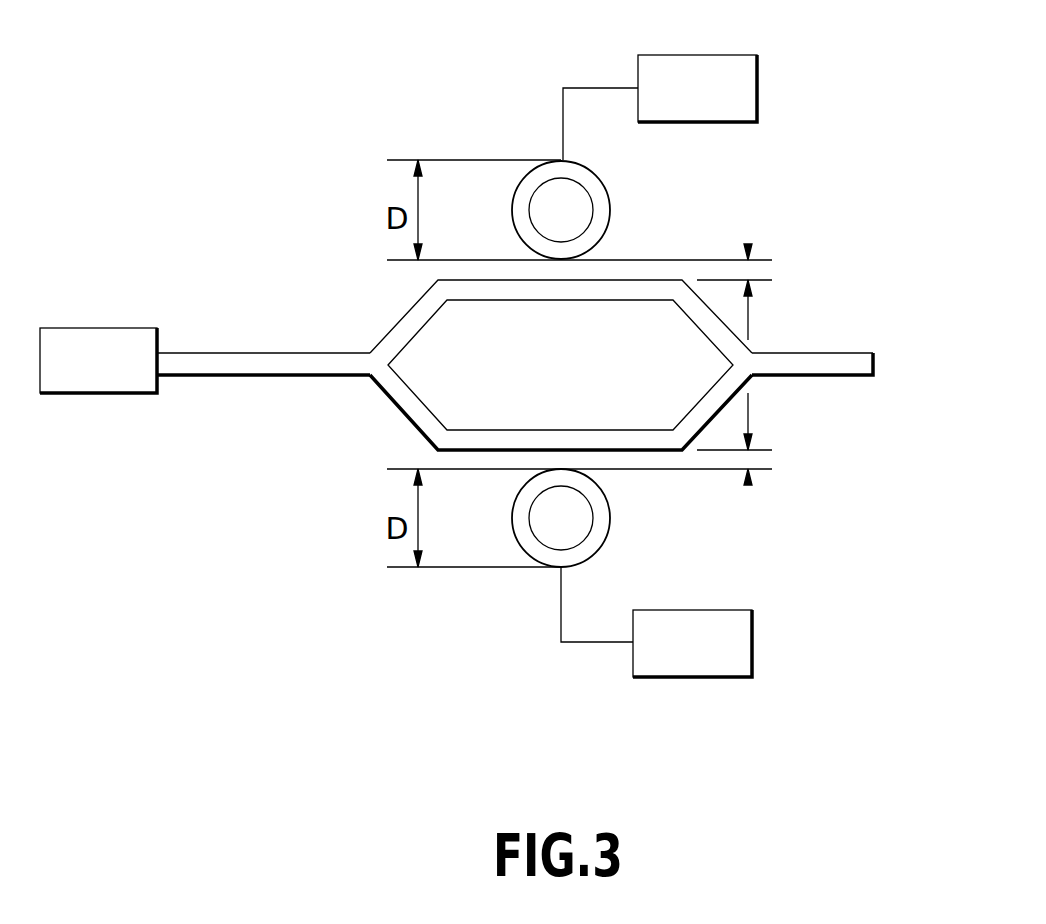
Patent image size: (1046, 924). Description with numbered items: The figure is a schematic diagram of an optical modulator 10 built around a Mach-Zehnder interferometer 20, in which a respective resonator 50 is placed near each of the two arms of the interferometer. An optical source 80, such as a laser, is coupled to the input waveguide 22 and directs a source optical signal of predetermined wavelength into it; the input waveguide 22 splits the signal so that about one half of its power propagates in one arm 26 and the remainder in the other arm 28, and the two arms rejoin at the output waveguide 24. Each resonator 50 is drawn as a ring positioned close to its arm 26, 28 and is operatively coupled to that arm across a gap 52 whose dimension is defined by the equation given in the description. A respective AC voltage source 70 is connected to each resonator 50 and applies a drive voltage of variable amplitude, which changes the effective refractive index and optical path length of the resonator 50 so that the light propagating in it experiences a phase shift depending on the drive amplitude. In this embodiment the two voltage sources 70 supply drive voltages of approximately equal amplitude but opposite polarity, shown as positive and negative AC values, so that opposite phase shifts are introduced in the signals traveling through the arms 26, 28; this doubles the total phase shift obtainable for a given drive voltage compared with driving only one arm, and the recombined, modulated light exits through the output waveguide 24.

The optical modulator 10 is at (317, 267).
The Mach-Zehnder interferometer 20 is at (400, 426).
The input waveguide 22 is at (248, 360).
The output waveguide 24 is at (840, 353).
The arm 26 is at (545, 292).
The arm 28 is at (545, 437).
The resonator 50 is at (470, 105).
The gap 52 is at (748, 260).
The AC voltage source 70 is at (680, 55).
The optical source 80 is at (100, 327).